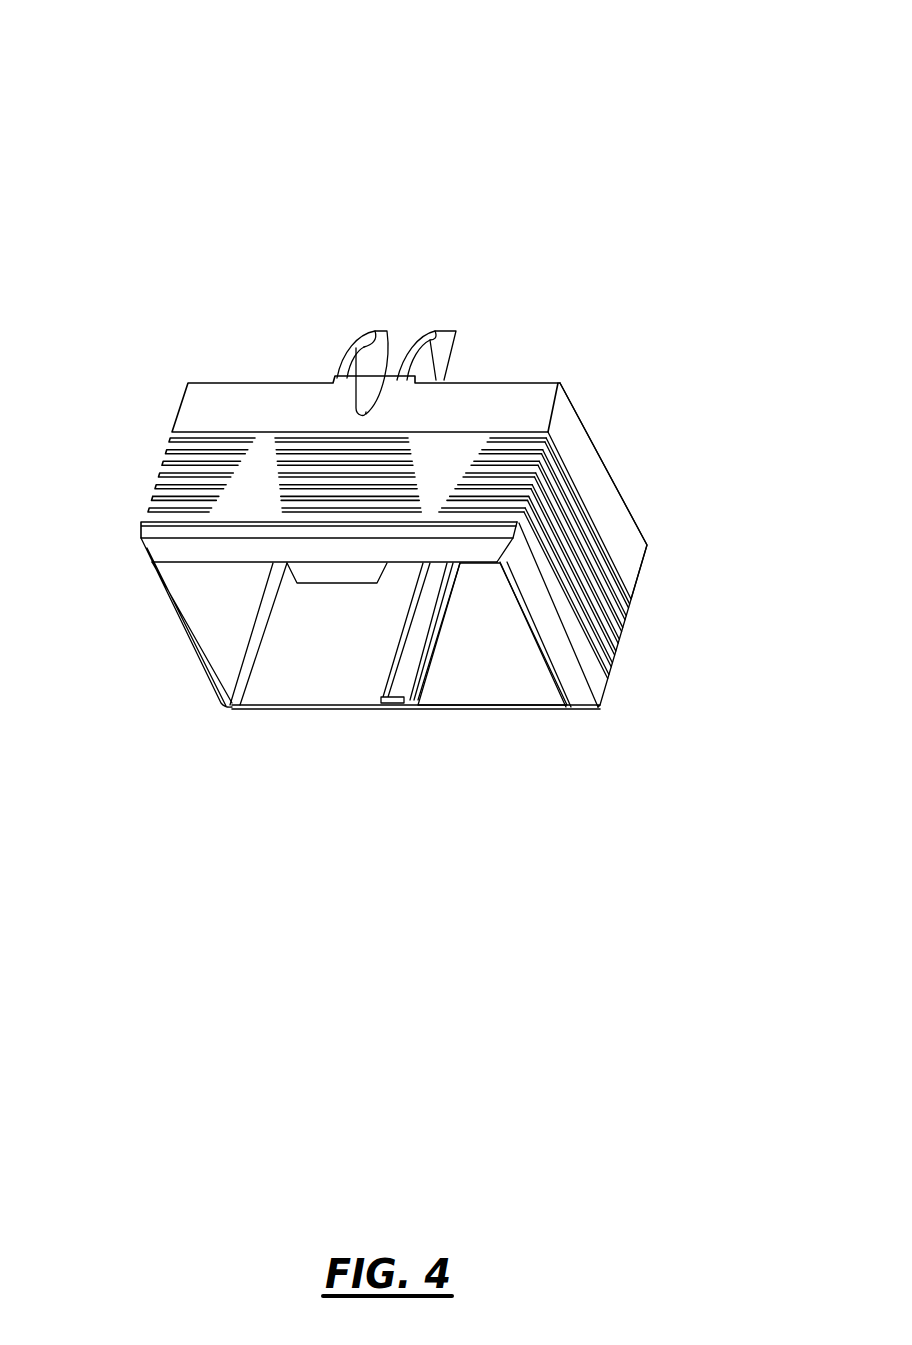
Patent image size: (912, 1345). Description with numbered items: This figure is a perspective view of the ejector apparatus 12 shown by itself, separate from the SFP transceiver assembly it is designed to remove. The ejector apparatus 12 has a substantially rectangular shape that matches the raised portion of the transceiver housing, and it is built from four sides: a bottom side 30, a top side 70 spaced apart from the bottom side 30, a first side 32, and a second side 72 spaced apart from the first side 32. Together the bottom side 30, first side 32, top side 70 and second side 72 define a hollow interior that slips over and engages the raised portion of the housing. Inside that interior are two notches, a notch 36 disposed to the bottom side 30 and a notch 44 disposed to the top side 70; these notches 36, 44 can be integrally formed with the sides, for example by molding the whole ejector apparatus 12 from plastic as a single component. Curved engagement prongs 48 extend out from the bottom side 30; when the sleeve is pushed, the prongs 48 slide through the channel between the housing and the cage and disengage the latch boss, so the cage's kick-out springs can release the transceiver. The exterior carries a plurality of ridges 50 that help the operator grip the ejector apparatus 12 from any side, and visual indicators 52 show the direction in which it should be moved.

The ejector apparatus 12 is at (205, 122).
The bottom side 30 is at (237, 392).
The first side 32 is at (612, 525).
The notch 36 is at (333, 567).
The notch 44 is at (397, 710).
The engagement prongs 48 is at (367, 343).
The ridges 50 is at (607, 625).
The visual indicators 52 is at (248, 492).
The top side 70 is at (480, 677).
The second side 72 is at (202, 607).